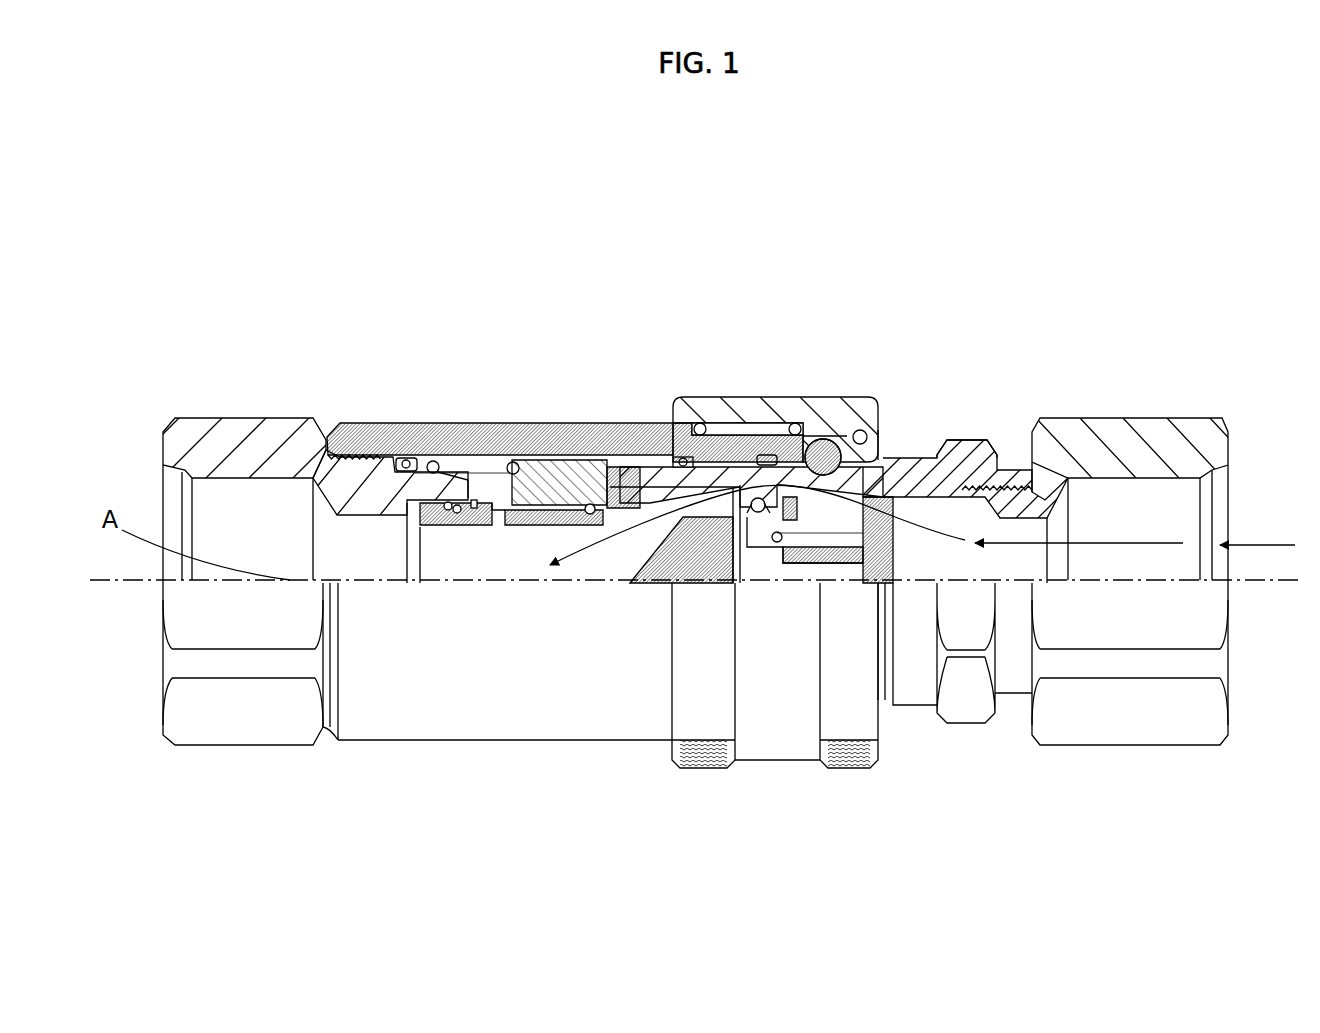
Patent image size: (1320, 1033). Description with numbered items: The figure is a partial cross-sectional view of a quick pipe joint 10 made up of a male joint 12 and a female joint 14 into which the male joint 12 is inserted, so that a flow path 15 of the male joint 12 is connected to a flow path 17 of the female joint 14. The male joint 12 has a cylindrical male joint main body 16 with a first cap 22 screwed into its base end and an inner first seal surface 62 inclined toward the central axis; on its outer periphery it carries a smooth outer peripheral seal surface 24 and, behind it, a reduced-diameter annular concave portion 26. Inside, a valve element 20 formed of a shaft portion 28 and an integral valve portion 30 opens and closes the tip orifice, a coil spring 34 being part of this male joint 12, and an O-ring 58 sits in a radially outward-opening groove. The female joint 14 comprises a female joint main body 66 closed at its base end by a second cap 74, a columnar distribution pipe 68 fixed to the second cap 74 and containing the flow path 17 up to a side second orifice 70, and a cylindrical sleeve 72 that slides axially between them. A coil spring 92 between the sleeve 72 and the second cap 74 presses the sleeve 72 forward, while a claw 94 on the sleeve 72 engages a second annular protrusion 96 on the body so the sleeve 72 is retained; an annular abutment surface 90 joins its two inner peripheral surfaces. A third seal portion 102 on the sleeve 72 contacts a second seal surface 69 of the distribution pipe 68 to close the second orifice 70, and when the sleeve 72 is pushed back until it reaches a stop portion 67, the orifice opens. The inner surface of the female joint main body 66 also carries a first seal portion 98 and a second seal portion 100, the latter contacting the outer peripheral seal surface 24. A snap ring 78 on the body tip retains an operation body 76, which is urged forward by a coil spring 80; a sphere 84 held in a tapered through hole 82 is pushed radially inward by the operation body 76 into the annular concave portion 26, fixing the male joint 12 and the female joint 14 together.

The pipe joint 10 is at (1183, 258).
The male joint 12 is at (1160, 380).
The female joint 14 is at (367, 392).
The flow path 15 is at (1232, 537).
The male joint main body 16 is at (897, 457).
The flow path 17 is at (590, 575).
The valve element 20 is at (770, 583).
The first cap 22 is at (1086, 418).
The outer peripheral seal surface 24 is at (740, 397).
The annular concave portion 26 is at (903, 583).
The shaft portion 28 is at (945, 560).
The valve portion 30 is at (800, 583).
The coil spring 34 is at (837, 583).
The O-ring 58 is at (748, 583).
The first seal surface 62 is at (645, 525).
The female joint main body 66 is at (490, 455).
The stop portion 67 is at (525, 470).
The distribution pipe 68 is at (528, 462).
The second seal surface 69 is at (730, 583).
The second orifice 70 is at (760, 455).
The sleeve 72 is at (580, 462).
The second cap 74 is at (232, 432).
The operation body 76 is at (832, 400).
The snap ring 78 is at (882, 420).
The coil spring 80 is at (718, 425).
The through hole 82 is at (818, 440).
The sphere 84 is at (860, 430).
The abutment surface 90 is at (640, 470).
The coil spring 92 is at (452, 455).
The claw 94 is at (520, 470).
The second annular protrusion 96 is at (680, 455).
The first seal portion 98 is at (688, 435).
The second seal portion 100 is at (768, 425).
The third seal portion 102 is at (620, 468).